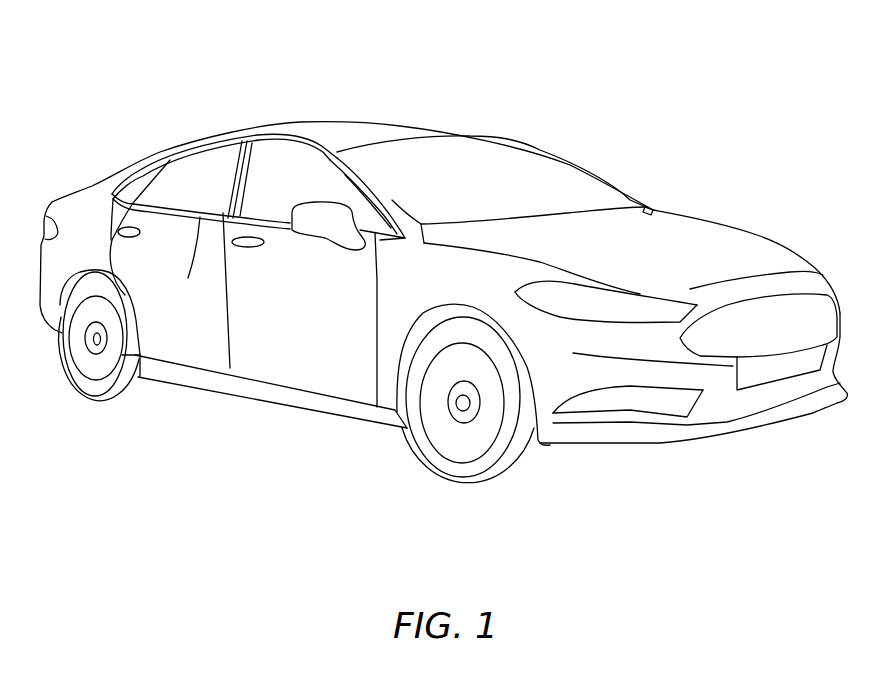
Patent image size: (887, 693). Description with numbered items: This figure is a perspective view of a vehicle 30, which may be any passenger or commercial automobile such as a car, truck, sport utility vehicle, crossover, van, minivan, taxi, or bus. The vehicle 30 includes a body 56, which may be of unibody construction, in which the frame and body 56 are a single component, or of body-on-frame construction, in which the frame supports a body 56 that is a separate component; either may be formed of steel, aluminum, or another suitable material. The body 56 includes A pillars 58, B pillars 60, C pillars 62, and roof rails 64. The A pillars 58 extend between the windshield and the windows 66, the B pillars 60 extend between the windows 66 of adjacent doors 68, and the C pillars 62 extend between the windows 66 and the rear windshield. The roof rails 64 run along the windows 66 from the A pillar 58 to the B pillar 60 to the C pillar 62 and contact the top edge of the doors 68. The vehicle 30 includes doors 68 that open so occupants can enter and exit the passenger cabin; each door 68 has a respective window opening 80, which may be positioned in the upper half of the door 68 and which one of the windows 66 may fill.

The vehicle 30 is at (463, 53).
The body 56 is at (383, 427).
The A pillars 58 is at (390, 190).
The B pillars 60 is at (248, 183).
The C pillars 62 is at (135, 165).
The roof rails 64 is at (263, 137).
The windows 66 is at (203, 172).
The doors 68 is at (267, 382).
The window opening 80 is at (263, 223).